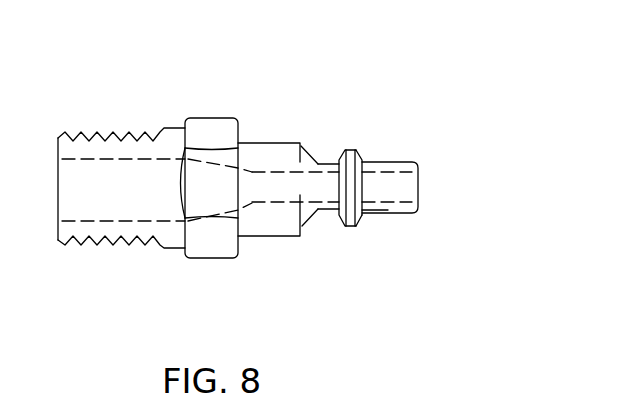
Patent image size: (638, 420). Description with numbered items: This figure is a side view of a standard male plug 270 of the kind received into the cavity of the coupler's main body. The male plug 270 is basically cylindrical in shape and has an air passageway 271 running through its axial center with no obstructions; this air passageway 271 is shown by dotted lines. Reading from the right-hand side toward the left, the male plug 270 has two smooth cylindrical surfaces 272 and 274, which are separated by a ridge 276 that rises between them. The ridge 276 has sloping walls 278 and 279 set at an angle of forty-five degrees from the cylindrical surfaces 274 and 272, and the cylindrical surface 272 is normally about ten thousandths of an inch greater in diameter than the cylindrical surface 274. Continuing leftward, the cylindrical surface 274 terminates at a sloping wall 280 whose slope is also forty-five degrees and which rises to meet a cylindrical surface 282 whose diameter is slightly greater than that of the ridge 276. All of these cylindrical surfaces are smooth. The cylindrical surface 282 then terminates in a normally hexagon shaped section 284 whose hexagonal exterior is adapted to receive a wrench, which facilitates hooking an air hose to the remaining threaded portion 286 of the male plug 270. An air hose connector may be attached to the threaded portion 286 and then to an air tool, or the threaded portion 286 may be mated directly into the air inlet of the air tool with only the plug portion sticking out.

The male plug 270 is at (158, 273).
The air passageway 271 is at (395, 203).
The cylindrical surface 272 is at (388, 162).
The cylindrical surface 274 is at (325, 162).
The ridge 276 is at (357, 226).
The sloping wall 278 is at (337, 222).
The sloping wall 279 is at (363, 218).
The sloping wall 280 is at (311, 214).
The cylindrical surface 282 is at (273, 140).
The hexagon shaped section 284 is at (213, 117).
The threaded portion 286 is at (105, 134).